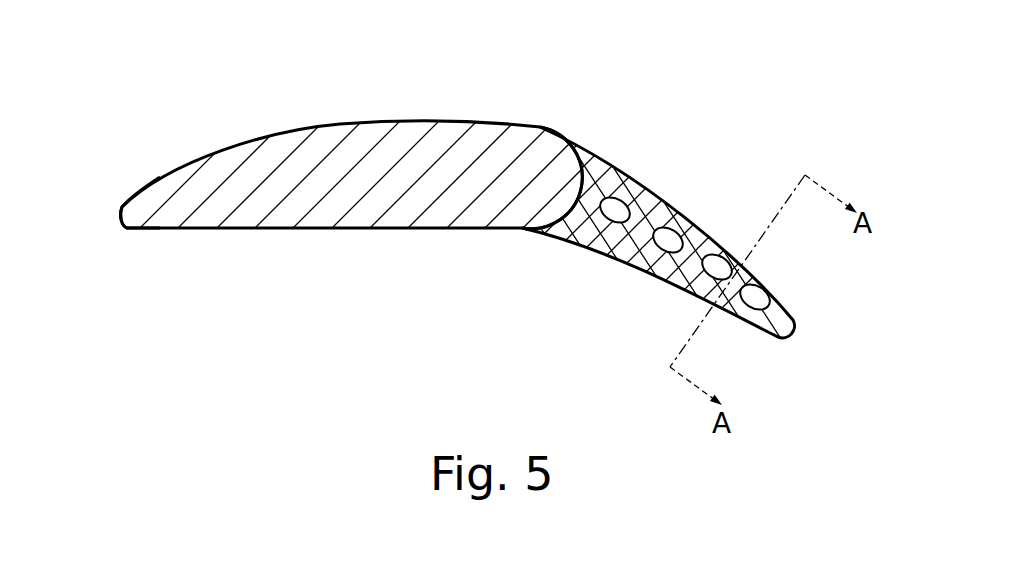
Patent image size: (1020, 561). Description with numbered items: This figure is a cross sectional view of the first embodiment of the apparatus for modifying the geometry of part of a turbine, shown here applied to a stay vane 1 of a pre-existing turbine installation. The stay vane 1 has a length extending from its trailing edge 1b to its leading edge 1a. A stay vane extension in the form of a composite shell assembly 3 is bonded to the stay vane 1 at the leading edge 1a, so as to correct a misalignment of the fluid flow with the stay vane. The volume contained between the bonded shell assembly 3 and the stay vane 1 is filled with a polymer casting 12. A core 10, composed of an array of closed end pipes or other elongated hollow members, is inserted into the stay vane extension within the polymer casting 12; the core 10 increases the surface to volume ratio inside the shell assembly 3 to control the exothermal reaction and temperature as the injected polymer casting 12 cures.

The stay vane 1 is at (341, 108).
The leading edge 1a is at (557, 201).
The trailing edge 1b is at (122, 174).
The composite shell assembly 3 is at (597, 212).
The core 10 is at (605, 236).
The polymer casting 12 is at (649, 200).